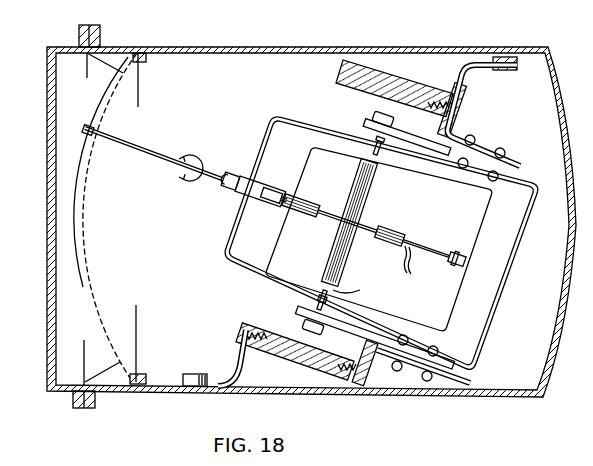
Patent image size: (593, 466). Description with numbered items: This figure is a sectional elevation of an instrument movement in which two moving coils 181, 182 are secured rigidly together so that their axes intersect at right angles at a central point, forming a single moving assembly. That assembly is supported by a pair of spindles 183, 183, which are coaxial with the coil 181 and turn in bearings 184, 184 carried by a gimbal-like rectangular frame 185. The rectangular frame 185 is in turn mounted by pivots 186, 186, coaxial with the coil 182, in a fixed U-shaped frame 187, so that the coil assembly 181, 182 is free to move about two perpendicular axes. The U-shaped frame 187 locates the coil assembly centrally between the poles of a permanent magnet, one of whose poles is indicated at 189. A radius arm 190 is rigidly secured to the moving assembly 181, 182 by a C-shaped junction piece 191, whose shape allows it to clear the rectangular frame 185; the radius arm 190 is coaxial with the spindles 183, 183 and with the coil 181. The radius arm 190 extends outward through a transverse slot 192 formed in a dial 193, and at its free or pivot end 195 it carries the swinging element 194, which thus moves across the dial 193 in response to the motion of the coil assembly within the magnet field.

The moving coil 181 is at (363, 168).
The moving coil 182 is at (365, 235).
The spindle 183 is at (268, 194).
The bearing 184 is at (262, 188).
The gimbal-like rectangular frame 185 is at (229, 226).
The pivot 186 is at (380, 112).
The fixed U-shaped frame 187 is at (486, 347).
The pole of permanent magnet 189 is at (413, 197).
The radius arm 190 is at (160, 157).
The C-shaped junction piece 191 is at (232, 171).
The transverse slot 192 is at (106, 118).
The dial 193 is at (87, 212).
The swinging element 194 is at (83, 286).
The pivot end 195 is at (95, 123).